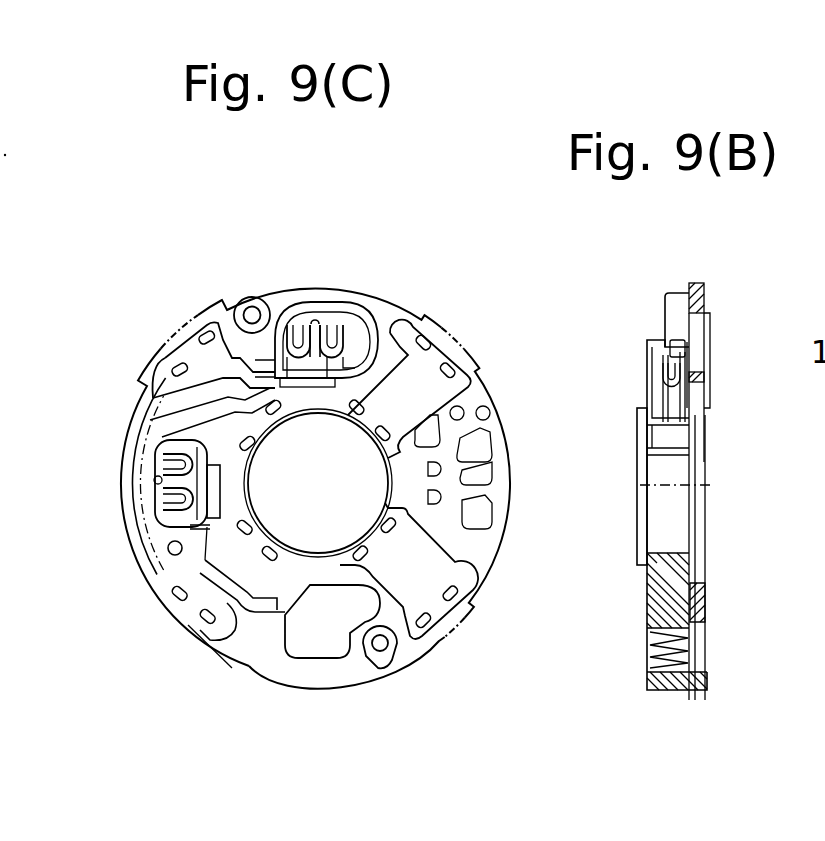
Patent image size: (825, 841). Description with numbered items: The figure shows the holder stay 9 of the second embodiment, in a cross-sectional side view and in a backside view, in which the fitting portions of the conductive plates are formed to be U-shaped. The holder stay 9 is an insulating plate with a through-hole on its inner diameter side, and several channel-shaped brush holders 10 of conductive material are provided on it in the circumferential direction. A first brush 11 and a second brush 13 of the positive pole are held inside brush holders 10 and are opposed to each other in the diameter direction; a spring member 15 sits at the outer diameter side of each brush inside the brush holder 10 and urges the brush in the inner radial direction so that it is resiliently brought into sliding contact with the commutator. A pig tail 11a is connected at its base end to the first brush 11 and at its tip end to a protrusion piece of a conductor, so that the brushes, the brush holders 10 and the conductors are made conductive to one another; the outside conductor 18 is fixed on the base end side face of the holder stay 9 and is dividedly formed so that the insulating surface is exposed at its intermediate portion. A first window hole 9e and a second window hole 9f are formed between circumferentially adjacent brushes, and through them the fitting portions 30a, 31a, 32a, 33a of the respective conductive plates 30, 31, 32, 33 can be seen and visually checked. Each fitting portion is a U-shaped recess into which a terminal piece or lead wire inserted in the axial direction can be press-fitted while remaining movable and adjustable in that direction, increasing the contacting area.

In FIG. 9C, the holder stay 9 is at (470, 306).
In FIG. 9B, the holder stay 9 is at (720, 276).
In FIG. 9C, the first window hole 9e is at (315, 320).
In FIG. 9C, the second window hole 9f is at (156, 480).
In FIG. 9B, the brush holder 10 is at (653, 370).
In FIG. 9B, the first brush 11 is at (665, 397).
In FIG. 9B, the pig tail 11a is at (690, 358).
In FIG. 9B, the second brush 13 is at (667, 599).
In FIG. 9B, the spring member 15 is at (663, 650).
In FIG. 9C, the outside conductor 18 is at (407, 573).
In FIG. 9C, the conductive plate 30 is at (352, 322).
In FIG. 9C, the fitting portion 30a is at (340, 332).
In FIG. 9C, the conductive plate 31 is at (268, 340).
In FIG. 9C, the fitting portion 31a is at (297, 328).
In FIG. 9C, the conductive plate 32 is at (195, 462).
In FIG. 9C, the fitting portion 32a is at (168, 465).
In FIG. 9C, the conductive plate 33 is at (200, 518).
In FIG. 9C, the fitting portion 33a is at (162, 505).